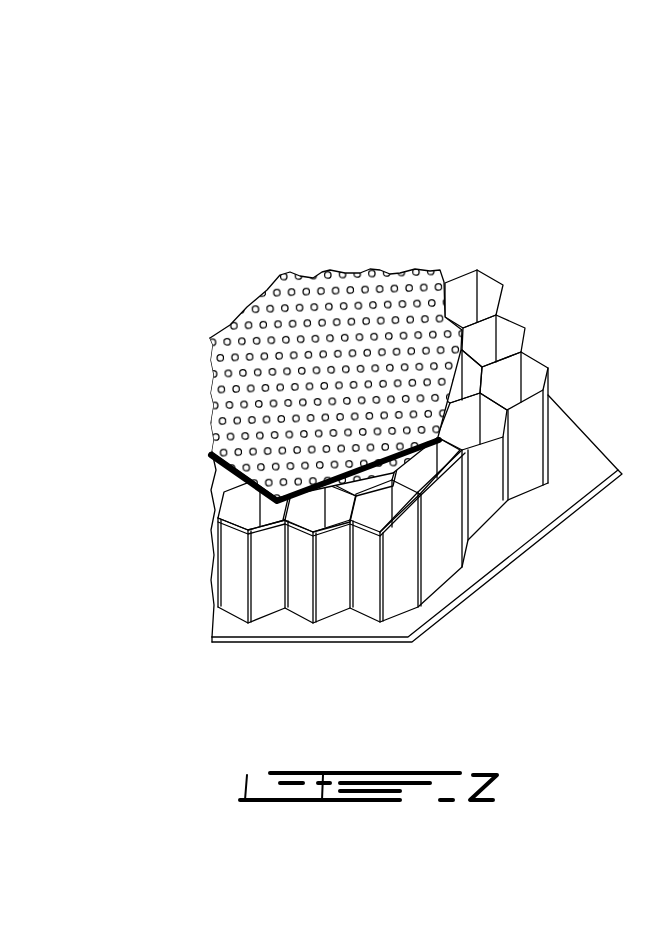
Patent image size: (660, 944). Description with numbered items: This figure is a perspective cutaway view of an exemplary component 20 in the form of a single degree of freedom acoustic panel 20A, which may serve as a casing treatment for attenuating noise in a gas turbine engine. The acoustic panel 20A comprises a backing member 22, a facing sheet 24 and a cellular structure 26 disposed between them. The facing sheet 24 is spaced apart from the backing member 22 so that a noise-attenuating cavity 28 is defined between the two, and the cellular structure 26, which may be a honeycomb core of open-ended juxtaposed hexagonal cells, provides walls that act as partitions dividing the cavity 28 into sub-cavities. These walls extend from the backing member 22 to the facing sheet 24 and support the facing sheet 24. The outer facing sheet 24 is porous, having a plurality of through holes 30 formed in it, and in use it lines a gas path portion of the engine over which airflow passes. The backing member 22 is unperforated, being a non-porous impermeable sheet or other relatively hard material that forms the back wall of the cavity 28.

The component 20 is at (224, 186).
The single degree of freedom (SDOF) acoustic panel 20A is at (383, 444).
The backing member 22 is at (287, 638).
The facing sheet 24 is at (298, 351).
The cellular structure 26 is at (383, 453).
The cavity 28 is at (538, 336).
The through holes 30 is at (297, 305).